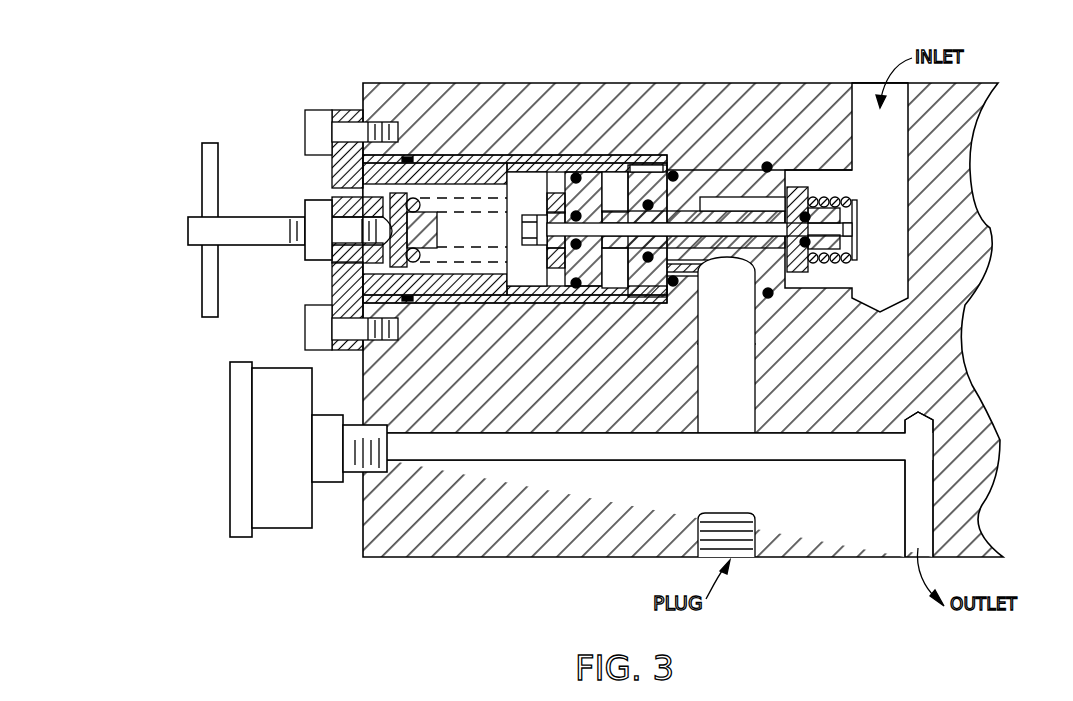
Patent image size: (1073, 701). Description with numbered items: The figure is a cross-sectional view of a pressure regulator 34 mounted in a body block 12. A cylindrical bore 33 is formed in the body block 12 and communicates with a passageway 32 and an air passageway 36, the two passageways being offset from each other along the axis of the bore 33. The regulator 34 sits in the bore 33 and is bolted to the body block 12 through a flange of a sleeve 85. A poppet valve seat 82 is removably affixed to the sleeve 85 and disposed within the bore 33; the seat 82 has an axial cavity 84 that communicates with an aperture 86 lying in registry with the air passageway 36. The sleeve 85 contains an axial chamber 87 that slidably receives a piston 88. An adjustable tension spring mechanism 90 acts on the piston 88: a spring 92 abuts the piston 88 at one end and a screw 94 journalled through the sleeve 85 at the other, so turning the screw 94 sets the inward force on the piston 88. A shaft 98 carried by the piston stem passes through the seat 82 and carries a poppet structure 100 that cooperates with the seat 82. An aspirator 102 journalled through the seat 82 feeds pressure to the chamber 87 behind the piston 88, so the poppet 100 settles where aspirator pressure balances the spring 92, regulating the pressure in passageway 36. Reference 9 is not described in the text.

The body block 12 is at (488, 376).
The passageway 32 is at (846, 197).
The cylindrical bore 33 is at (490, 188).
The pressure regulator 34 is at (298, 170).
The air passageway 36 is at (737, 439).
The poppet valve seat 82 is at (710, 168).
The axial cavity 84 is at (782, 205).
The sleeve 85 is at (427, 154).
The aperture 86 is at (732, 282).
The axial chamber 87 is at (509, 185).
The piston 88 is at (593, 181).
The adjustable tension spring mechanism 90 is at (342, 240).
The spring 92 is at (455, 203).
The screw 94 is at (197, 238).
The shaft 98 is at (848, 232).
The poppet structure 100 is at (862, 204).
The aspirator 102 is at (726, 428).
The valve seat 9 is at (792, 166).